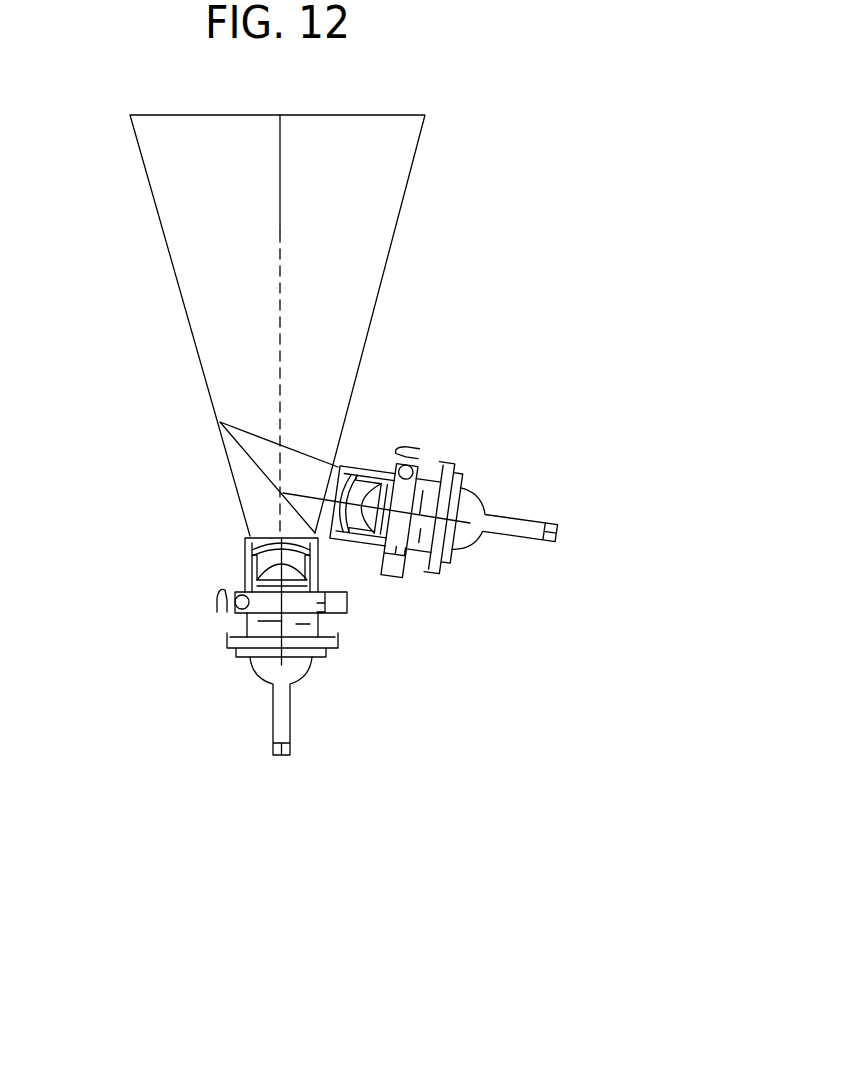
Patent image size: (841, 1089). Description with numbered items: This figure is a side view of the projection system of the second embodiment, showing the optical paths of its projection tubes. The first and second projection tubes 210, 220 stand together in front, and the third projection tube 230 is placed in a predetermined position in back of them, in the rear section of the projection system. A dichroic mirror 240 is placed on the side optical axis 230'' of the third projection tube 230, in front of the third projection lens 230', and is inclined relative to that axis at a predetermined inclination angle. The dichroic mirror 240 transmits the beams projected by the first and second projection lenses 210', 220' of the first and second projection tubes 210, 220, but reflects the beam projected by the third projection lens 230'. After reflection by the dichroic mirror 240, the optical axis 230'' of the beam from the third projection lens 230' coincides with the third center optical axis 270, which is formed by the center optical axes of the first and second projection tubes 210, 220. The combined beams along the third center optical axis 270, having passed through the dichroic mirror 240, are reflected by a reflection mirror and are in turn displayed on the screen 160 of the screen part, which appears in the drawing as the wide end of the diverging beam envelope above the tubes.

The screen 160 is at (173, 117).
The third center optical axis 270 is at (282, 223).
The dichroic mirror 240 is at (256, 467).
The first projection tube 210 is at (173, 646).
The second projection tube 220 is at (282, 623).
The first projection lens 210' is at (181, 553).
The second projection lens 220' is at (281, 565).
The third projection tube 230 is at (447, 509).
The third projection lens 230' is at (379, 475).
The side optical axis 230'' is at (323, 431).